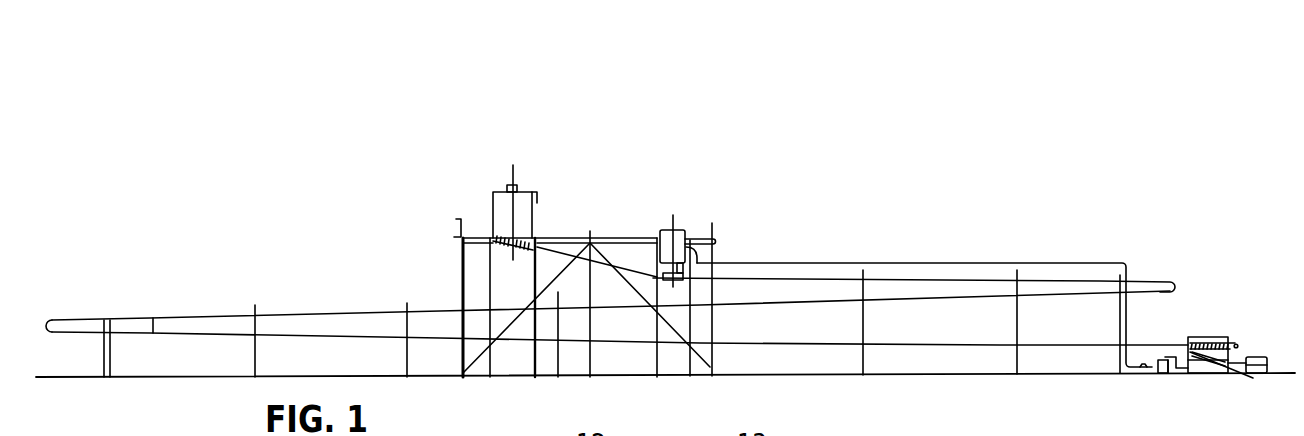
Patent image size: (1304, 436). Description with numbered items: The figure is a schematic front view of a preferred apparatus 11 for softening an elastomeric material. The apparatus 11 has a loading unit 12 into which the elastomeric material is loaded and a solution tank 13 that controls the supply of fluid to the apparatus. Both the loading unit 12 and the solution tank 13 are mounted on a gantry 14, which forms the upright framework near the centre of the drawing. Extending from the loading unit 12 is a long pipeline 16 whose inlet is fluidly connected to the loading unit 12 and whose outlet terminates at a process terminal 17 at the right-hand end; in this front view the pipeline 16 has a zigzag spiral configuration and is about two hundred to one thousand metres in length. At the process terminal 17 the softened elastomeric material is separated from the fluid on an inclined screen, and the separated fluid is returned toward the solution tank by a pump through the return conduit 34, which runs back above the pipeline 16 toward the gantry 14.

The apparatus 11 is at (950, 167).
The loading unit 12 is at (503, 200).
The solution tank 13 is at (683, 223).
The gantry 14 is at (572, 241).
The pipeline 16 is at (351, 311).
The process terminal 17 is at (1207, 337).
The return conduit 34 is at (1100, 263).